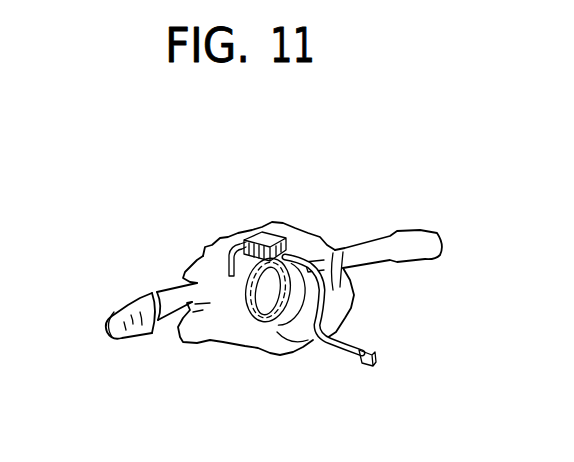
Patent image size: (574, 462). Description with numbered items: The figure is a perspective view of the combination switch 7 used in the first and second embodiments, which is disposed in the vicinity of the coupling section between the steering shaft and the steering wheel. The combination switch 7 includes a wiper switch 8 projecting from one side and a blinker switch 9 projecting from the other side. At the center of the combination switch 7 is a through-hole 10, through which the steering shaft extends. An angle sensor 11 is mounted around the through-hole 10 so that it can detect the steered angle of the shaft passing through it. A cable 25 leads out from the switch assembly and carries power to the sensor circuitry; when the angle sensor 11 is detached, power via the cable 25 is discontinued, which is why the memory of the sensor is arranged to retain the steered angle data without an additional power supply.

The combination switch 7 is at (212, 233).
The wiper switch 8 is at (115, 317).
The blinker switch 9 is at (427, 228).
The through-hole 10 is at (270, 290).
The angle sensor 11 is at (262, 236).
The cable 25 is at (350, 367).